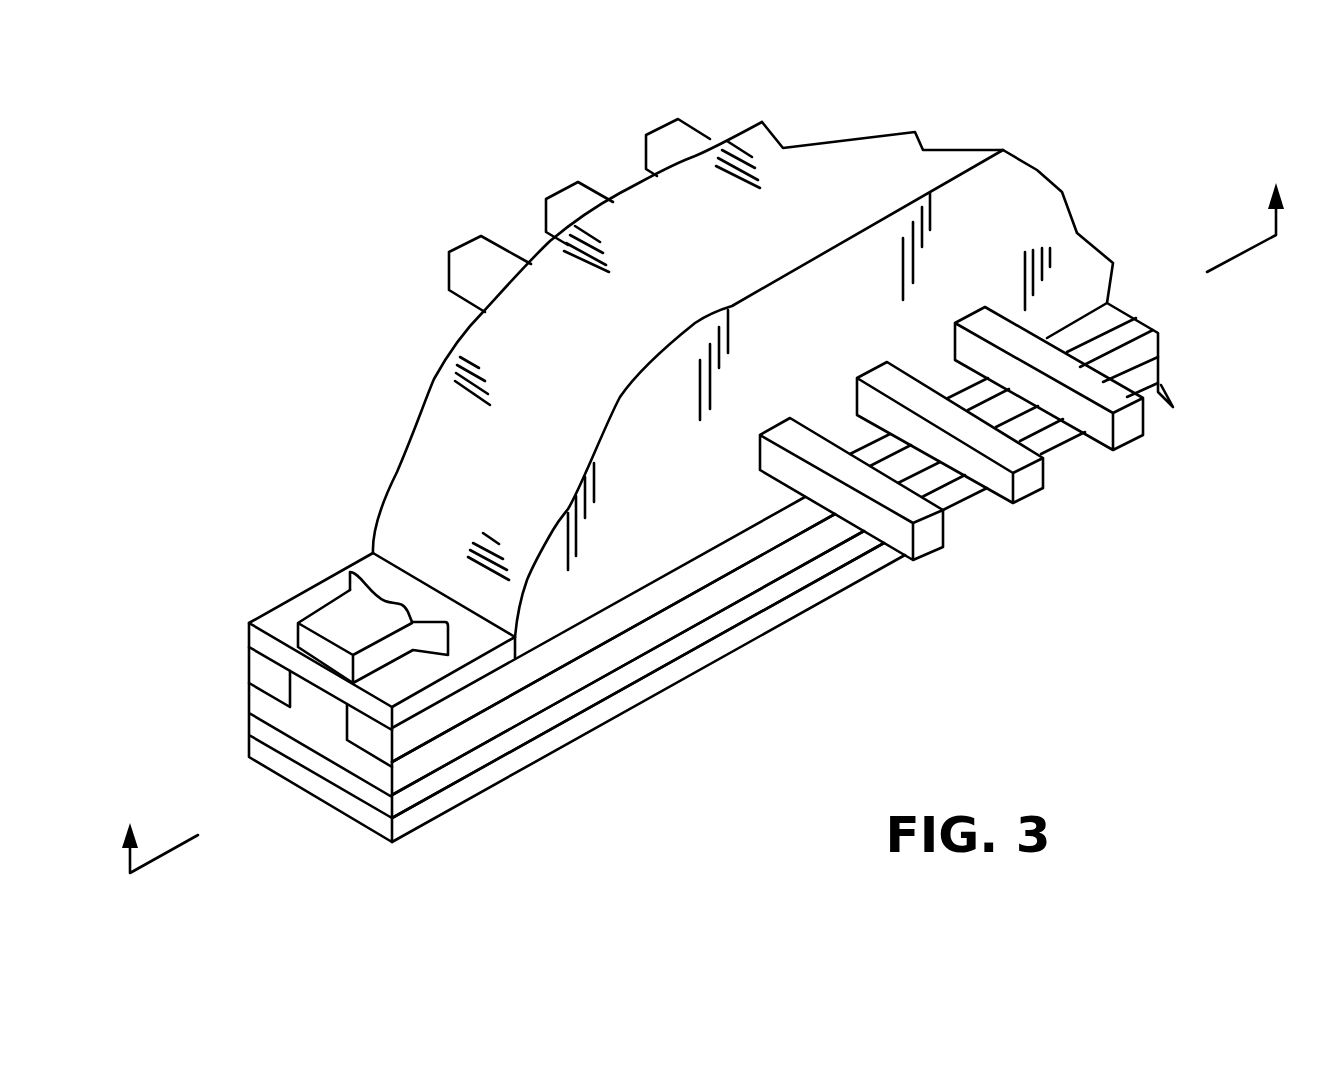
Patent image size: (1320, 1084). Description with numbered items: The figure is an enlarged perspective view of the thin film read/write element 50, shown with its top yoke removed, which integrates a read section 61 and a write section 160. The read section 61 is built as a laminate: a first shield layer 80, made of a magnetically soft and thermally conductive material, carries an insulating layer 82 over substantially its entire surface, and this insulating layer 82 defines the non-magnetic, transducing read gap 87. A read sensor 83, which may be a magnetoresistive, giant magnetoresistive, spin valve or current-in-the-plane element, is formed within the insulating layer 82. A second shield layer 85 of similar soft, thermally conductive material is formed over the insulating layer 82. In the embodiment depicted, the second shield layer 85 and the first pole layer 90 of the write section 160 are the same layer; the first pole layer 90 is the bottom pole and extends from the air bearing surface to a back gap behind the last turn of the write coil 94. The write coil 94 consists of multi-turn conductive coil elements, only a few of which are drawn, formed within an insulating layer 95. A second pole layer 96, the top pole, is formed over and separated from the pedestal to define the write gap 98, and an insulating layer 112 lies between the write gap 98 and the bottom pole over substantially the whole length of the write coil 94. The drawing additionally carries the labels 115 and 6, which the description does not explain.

The read/write element 50 is at (437, 111).
The insulating layer 95 is at (842, 341).
The write section 160 is at (198, 648).
The write gap 98 is at (260, 637).
The first pole layer 90 is at (312, 713).
The read section 61 is at (198, 734).
The second pole layer 96 is at (337, 576).
The flap 115 is at (393, 597).
The first shield layer 80 is at (694, 618).
The insulating layer 112 is at (667, 597).
The second shield layer 85 is at (495, 727).
The insulating layer 82 is at (638, 691).
The read gap 87 is at (465, 765).
The read sensor 83 is at (330, 772).
The write coil 94 is at (1132, 435).
The view direction 6 is at (702, 510).